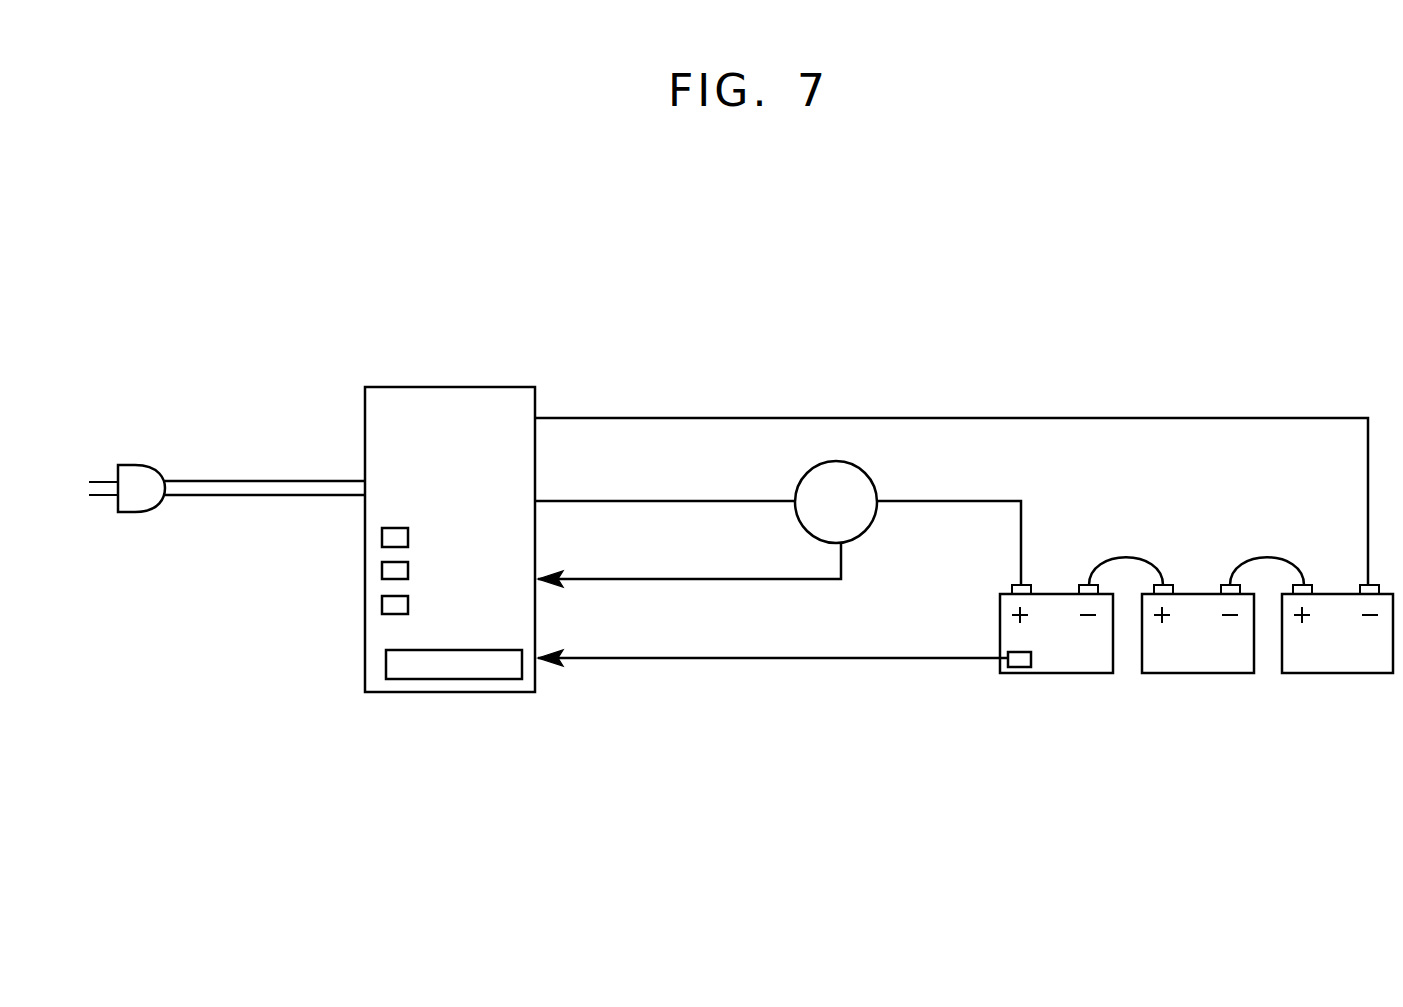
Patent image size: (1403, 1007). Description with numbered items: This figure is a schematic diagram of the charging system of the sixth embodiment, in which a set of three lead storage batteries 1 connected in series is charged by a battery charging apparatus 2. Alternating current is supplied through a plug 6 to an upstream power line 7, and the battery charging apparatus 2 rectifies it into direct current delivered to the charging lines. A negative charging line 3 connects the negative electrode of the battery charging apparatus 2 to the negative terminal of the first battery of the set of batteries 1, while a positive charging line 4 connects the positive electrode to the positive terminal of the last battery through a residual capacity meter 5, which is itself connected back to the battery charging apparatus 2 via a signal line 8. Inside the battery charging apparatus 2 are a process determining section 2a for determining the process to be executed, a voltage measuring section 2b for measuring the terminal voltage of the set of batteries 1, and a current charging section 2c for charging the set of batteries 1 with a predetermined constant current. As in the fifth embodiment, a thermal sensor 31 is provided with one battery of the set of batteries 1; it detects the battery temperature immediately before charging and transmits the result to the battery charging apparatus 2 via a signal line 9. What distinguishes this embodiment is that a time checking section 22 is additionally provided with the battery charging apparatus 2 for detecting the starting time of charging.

The lead storage batteries 1 is at (1052, 673).
The battery charging apparatus 2 is at (485, 387).
The process determining section 2a is at (382, 538).
The voltage measuring section 2b is at (382, 573).
The current charging section 2c is at (382, 605).
The negative charging line 3 is at (597, 418).
The positive charging line 4 is at (617, 501).
The residual capacity meter 5 is at (865, 536).
The plug 6 is at (133, 483).
The upstream power line 7 is at (218, 459).
The signal line 8 is at (683, 580).
The signal line 9 is at (702, 660).
The time checking section 22 is at (437, 679).
The thermal sensor 31 is at (1012, 667).